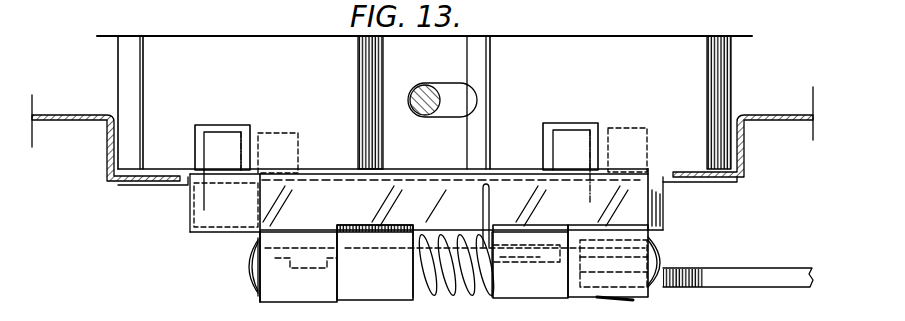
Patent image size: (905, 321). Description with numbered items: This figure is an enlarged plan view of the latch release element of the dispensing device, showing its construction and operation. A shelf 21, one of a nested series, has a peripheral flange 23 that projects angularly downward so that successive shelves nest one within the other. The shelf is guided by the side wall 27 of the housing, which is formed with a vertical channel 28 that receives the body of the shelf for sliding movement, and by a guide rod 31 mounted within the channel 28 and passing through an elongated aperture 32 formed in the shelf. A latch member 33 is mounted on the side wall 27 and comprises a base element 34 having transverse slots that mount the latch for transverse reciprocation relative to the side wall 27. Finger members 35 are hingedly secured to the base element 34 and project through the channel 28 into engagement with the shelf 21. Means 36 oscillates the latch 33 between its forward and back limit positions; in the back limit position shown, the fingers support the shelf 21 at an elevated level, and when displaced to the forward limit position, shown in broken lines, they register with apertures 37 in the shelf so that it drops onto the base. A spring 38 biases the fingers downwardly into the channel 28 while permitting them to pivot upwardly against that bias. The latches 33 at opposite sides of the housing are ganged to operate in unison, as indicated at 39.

The shelf 21 is at (140, 53).
The peripheral flange 23 is at (723, 53).
The side wall 27 is at (68, 121).
The vertical channel 28 is at (735, 146).
The guide rod 31 is at (421, 87).
The elongated aperture 32 is at (472, 97).
The latch member 33 is at (250, 290).
The base element 34 is at (256, 252).
The finger member 35 is at (289, 130).
The oscillating means 36 is at (582, 254).
The aperture 37 is at (216, 126).
The spring 38 is at (482, 208).
The ganging means 39 is at (741, 272).